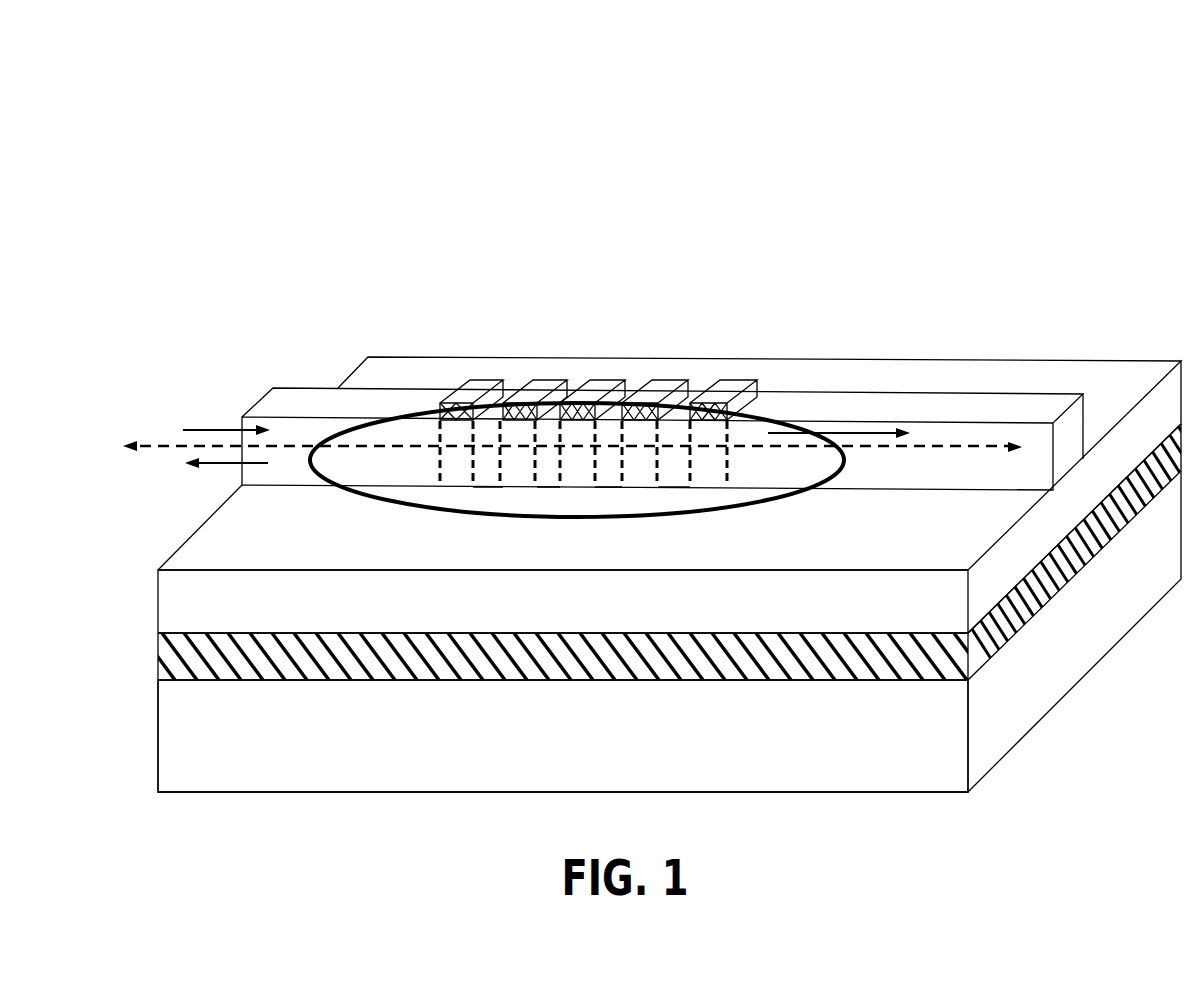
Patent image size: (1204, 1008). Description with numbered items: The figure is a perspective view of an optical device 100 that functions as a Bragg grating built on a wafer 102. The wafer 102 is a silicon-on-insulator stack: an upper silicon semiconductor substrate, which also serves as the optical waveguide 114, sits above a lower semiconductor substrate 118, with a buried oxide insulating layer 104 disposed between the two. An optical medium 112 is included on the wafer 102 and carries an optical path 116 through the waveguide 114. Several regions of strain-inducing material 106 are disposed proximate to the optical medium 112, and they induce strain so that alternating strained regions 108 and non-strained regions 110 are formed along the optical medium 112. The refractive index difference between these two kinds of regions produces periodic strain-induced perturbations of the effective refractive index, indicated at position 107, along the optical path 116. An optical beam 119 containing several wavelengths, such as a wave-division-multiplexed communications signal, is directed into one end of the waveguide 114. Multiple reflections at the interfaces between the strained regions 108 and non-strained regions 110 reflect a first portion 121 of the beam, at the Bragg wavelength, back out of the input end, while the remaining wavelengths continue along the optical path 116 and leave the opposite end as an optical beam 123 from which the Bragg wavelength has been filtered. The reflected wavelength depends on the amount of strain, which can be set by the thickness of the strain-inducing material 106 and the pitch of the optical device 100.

The optical device 100 is at (1031, 63).
The wafer 102 is at (1050, 232).
The insulating layer 104 is at (1072, 570).
The strain-inducing material 106 is at (471, 385).
The periodic strain-induced perturbations 107 is at (760, 418).
The strained regions 108 is at (582, 454).
The non-strained regions 110 is at (675, 486).
The optical medium 112 is at (172, 550).
The optical waveguide 114 is at (158, 602).
The optical path 116 is at (550, 444).
The semiconductor substrate 118 is at (170, 735).
The optical beam 119 is at (182, 397).
The first portion of optical beam 121 is at (190, 470).
The optical beam 123 is at (880, 427).